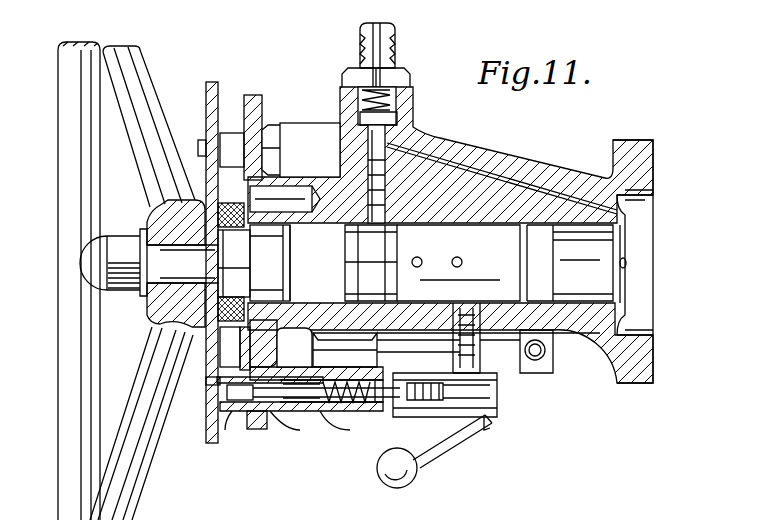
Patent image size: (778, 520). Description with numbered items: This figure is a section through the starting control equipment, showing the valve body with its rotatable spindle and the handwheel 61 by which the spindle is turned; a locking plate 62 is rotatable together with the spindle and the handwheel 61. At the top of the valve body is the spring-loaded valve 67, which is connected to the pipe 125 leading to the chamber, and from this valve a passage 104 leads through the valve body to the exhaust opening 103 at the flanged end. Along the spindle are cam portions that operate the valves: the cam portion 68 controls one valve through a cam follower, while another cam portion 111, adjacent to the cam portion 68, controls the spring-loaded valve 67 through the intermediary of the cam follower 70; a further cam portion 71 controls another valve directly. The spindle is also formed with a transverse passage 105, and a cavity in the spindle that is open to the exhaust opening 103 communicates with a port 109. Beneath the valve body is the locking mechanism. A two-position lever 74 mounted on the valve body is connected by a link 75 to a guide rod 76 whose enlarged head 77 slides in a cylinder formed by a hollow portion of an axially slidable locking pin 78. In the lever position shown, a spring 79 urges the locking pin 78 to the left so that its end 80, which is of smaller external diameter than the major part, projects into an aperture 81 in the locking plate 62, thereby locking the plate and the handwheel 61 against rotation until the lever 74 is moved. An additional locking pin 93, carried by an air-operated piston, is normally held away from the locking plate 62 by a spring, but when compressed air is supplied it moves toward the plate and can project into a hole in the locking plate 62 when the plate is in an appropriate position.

The handwheel 61 is at (140, 90).
The locking plate 62 is at (217, 88).
The additional locking pin 93 is at (203, 148).
The pipe 125 is at (374, 22).
The spring-loaded valve 67 is at (392, 120).
The passage 104 is at (490, 163).
The cam portion 68 is at (350, 252).
The cam follower 70 is at (390, 228).
The cam portion 111 is at (383, 260).
The transverse passage 105 is at (433, 255).
The port 109 is at (462, 262).
The cam portion 71 is at (553, 267).
The exhaust opening 103 is at (647, 267).
The aperture 81 is at (206, 383).
The end of locking pin 80 is at (213, 393).
The enlarged head 77 is at (240, 413).
The locking pin 78 is at (283, 417).
The spring 79 is at (335, 405).
The guide rod 76 is at (355, 407).
The link 75 is at (420, 403).
The two-position lever 74 is at (443, 448).